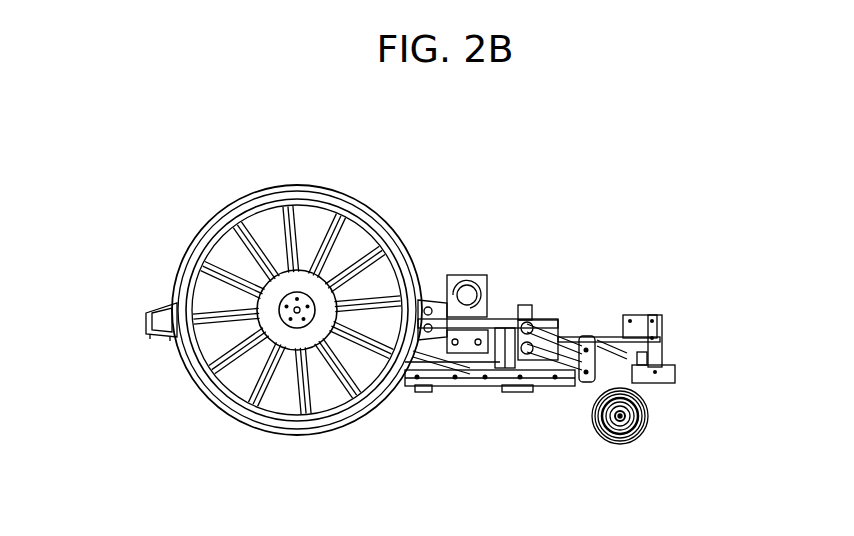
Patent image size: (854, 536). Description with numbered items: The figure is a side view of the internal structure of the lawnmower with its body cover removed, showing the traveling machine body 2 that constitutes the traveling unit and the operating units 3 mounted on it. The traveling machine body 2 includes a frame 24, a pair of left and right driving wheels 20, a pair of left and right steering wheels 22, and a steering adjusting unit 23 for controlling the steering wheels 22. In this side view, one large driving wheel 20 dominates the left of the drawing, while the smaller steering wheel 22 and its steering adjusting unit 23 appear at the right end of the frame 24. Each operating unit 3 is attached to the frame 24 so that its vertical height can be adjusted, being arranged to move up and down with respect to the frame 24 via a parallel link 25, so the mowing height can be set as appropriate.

The traveling machine body 2 is at (146, 321).
The operating unit 3 is at (414, 404).
The driving wheel 20 is at (287, 183).
The steering wheel 22 is at (649, 416).
The steering adjusting unit 23 is at (662, 367).
The frame 24 is at (606, 330).
The parallel link 25 is at (563, 355).